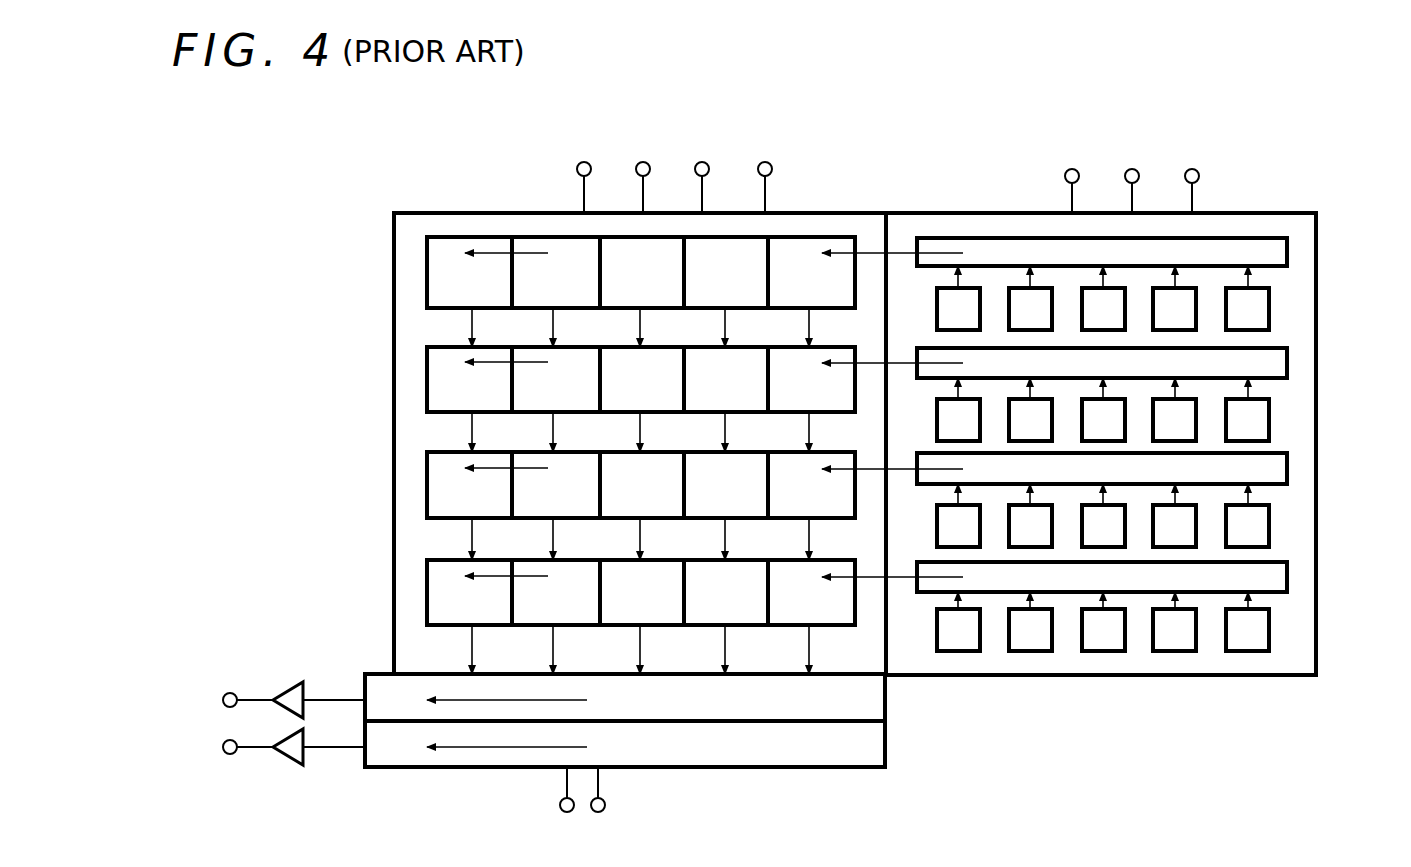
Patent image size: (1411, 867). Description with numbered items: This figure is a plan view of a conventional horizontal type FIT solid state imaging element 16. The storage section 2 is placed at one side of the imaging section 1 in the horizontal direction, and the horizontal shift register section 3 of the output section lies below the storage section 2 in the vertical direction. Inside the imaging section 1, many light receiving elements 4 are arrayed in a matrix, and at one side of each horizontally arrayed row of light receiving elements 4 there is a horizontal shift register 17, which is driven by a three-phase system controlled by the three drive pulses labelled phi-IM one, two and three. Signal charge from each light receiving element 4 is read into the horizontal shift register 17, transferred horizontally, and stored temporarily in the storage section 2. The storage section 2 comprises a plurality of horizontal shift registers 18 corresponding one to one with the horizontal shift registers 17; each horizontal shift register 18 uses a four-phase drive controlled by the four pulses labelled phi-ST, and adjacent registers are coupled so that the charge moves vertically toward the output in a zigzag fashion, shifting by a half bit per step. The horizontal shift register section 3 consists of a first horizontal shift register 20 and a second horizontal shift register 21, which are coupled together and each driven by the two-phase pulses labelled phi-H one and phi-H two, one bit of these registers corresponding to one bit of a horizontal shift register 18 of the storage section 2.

The horizontal type FIT solid state imaging element 16 is at (287, 239).
The imaging section 1 is at (1318, 433).
The storage section 2 is at (392, 434).
The horizontal shift register section 3 is at (775, 768).
The light receiving element 4 is at (1262, 308).
The horizontal shift register 17 is at (1270, 248).
The horizontal shift register 18 is at (446, 243).
The first horizontal shift register 20 is at (872, 699).
The second horizontal shift register 21 is at (872, 741).